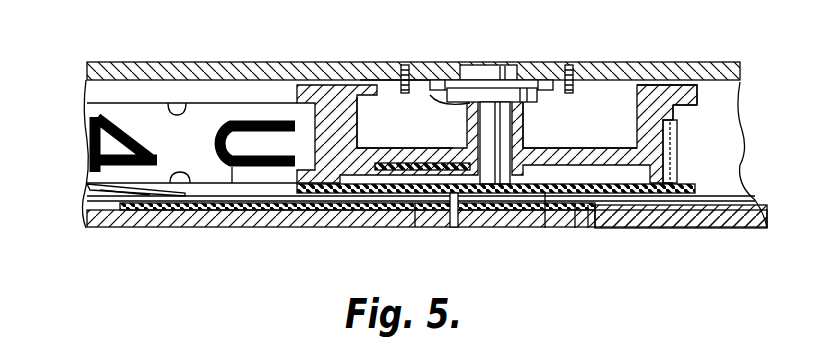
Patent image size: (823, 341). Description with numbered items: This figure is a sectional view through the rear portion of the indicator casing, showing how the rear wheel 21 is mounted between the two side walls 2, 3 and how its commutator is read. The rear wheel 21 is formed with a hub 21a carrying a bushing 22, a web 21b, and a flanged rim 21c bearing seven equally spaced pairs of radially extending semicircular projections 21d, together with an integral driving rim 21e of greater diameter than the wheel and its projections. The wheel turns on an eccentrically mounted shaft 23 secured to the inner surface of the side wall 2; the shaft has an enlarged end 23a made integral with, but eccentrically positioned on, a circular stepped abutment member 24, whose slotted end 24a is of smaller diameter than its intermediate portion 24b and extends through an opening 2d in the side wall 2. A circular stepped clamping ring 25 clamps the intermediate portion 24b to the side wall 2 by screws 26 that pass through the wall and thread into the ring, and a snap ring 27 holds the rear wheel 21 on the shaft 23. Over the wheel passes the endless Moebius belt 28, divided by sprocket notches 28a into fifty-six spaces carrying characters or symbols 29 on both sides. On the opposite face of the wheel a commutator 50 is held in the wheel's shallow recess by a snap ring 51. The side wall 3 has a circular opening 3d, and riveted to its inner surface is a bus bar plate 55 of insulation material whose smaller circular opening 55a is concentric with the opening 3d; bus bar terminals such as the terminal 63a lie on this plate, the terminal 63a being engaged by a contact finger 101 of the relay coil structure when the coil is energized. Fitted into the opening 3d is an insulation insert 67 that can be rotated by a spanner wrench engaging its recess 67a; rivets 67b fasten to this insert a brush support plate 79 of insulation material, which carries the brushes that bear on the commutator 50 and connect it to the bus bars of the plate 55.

The side wall 2 is at (200, 68).
The opening 2d is at (514, 70).
The side wall 3 is at (248, 225).
The circular opening 3d is at (592, 228).
The rear wheel 21 is at (343, 177).
The hub 21a is at (525, 126).
The web 21b is at (404, 160).
The flanged rim 21c is at (672, 88).
The semicircular projections 21d is at (680, 109).
The driving rim 21e is at (698, 90).
The bushing 22 is at (468, 122).
The eccentrically mounted shaft 23 is at (576, 94).
The enlarged end 23a is at (440, 82).
The stepped abutment member 24 is at (531, 86).
The slotted end 24a is at (485, 66).
The intermediate portion 24b is at (556, 80).
The clamping ring 25 is at (366, 70).
The screws 26 is at (405, 65).
The snap ring 27 is at (515, 228).
The endless belt 28 is at (226, 110).
The sprocket notches 28a is at (174, 106).
The characters or symbols 29 is at (232, 168).
The commutator 50 is at (673, 150).
The snap ring 51 is at (670, 165).
The bus bar plate 55 is at (745, 229).
The circular opening 55a is at (590, 229).
The bus bar terminal 63a is at (108, 226).
The insert 67 is at (400, 212).
The recess 67a is at (421, 230).
The rivets 67b is at (453, 230).
The brush support plate 79 is at (697, 189).
The contact finger 101 is at (88, 203).